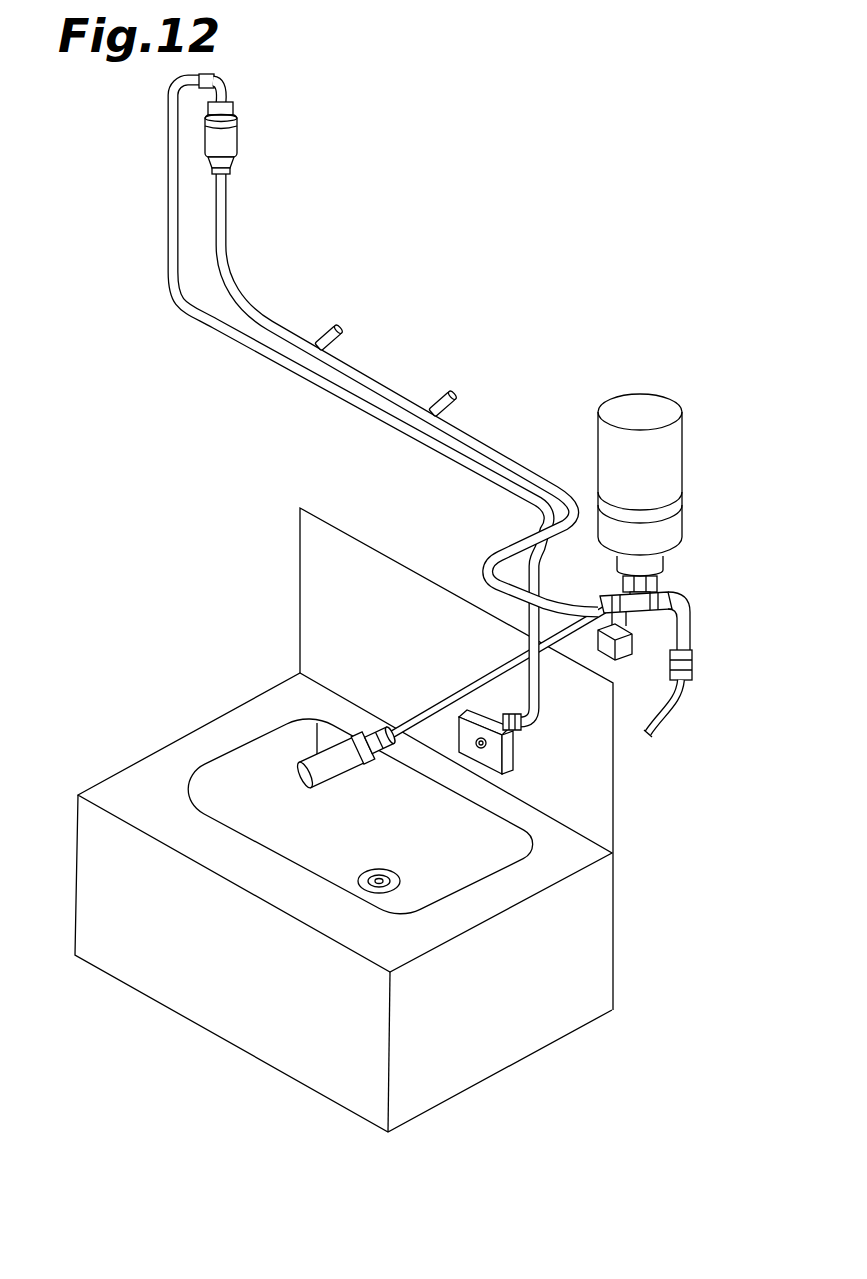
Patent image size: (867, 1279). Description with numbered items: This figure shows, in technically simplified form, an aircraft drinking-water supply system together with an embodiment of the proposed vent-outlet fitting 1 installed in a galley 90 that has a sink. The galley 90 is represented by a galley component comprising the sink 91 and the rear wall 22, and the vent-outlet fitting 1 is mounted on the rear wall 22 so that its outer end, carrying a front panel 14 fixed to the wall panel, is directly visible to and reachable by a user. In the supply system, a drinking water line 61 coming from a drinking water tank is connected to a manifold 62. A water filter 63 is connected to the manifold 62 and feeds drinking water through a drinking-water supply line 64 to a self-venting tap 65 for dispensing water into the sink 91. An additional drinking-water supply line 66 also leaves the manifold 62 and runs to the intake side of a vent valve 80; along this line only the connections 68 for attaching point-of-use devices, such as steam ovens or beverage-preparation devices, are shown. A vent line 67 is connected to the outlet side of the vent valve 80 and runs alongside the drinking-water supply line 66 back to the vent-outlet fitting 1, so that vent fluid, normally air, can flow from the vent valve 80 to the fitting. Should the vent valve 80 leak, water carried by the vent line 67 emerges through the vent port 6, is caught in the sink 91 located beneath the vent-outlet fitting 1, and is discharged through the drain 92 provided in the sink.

The vent-outlet fitting 1 is at (470, 777).
The vent port 6 is at (478, 745).
The front panel 14 is at (505, 766).
The rear wall 22 is at (593, 815).
The drinking water line 61 is at (673, 721).
The manifold 62 is at (691, 641).
The water filter 63 is at (672, 480).
The drinking-water supply line 64 is at (488, 668).
The self-venting tap 65 is at (345, 778).
The additional drinking-water supply line 66 is at (240, 303).
The vent line 67 is at (198, 310).
The connections 68 is at (337, 327).
The vent valve 80 is at (224, 137).
The galley 90 is at (205, 652).
The sink 91 is at (258, 780).
The drain 92 is at (400, 882).